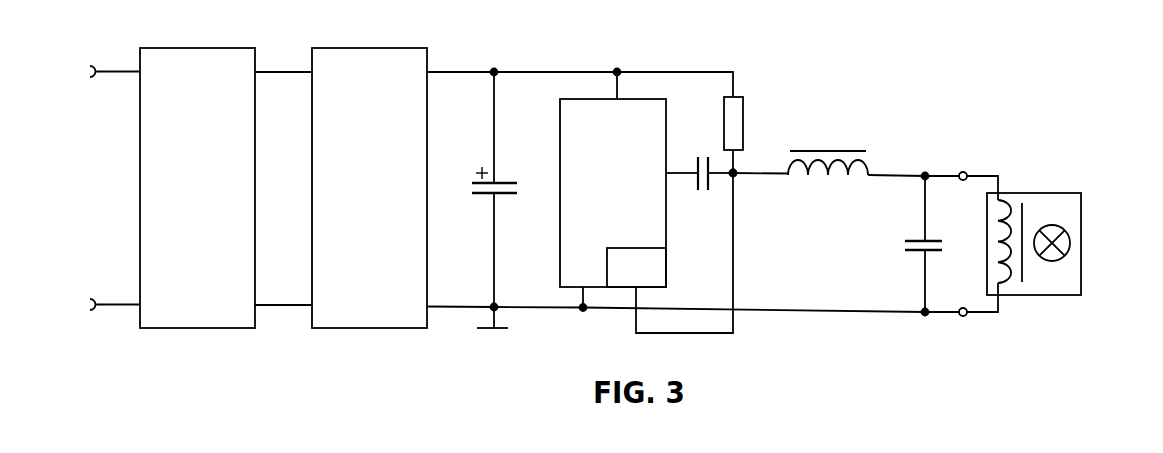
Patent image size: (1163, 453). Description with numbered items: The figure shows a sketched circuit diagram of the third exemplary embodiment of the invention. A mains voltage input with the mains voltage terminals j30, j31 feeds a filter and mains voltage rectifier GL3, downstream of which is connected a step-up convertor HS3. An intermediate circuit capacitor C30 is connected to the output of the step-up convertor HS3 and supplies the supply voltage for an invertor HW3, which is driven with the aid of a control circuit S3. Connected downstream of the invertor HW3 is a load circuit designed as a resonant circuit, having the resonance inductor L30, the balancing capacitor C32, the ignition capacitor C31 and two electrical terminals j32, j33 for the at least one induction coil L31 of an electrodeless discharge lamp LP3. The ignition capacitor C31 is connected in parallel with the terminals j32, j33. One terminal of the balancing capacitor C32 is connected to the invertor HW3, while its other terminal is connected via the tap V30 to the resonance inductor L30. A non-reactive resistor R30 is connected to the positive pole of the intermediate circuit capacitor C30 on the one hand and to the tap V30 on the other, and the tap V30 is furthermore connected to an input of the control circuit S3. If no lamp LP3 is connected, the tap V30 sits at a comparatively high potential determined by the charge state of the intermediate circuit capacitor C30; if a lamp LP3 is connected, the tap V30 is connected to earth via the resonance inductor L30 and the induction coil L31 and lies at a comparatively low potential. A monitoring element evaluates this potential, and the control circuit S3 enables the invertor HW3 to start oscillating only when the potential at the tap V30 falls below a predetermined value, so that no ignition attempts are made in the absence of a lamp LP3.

The mains voltage terminal j30 is at (109, 55).
The mains voltage terminal j31 is at (107, 320).
The filter and mains voltage rectifier GL3 is at (197, 188).
The step-up convertor HS3 is at (369, 188).
The intermediate circuit capacitor C30 is at (510, 200).
The invertor HW3 is at (613, 190).
The control circuit S3 is at (636, 267).
The balancing capacitor C32 is at (698, 190).
The non-reactive resistor R30 is at (760, 123).
The tap V30 is at (757, 188).
The resonance inductor L30 is at (828, 150).
The electrical terminal j32 is at (960, 162).
The ignition capacitor C31 is at (940, 244).
The electrical terminal j33 is at (960, 326).
The electrodeless discharge lamp LP3 is at (1057, 244).
The induction coil L31 is at (1007, 283).